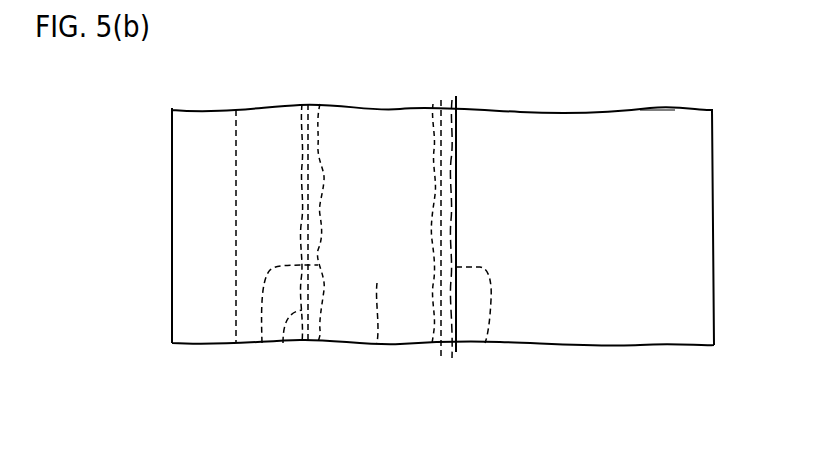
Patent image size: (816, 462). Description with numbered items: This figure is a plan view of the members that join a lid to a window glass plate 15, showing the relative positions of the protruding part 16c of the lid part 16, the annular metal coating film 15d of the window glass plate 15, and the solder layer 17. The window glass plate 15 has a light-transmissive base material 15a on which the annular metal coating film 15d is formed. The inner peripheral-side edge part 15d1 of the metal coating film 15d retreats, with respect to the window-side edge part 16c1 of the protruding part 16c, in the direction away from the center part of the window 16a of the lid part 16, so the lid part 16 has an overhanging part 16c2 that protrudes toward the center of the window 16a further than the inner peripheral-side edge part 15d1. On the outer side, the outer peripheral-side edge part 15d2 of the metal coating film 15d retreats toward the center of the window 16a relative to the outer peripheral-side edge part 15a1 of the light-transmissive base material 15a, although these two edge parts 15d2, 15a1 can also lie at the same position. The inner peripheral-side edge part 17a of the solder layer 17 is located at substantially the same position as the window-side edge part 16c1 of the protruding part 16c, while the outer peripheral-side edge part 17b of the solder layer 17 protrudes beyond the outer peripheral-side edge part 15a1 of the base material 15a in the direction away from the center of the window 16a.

The window glass plate 15 is at (630, 344).
The light-transmissive base material 15a is at (657, 133).
The outer peripheral-side edge part of the light-transmissive base material 15a1 is at (285, 343).
The annular metal coating film 15d is at (377, 343).
The inner peripheral-side edge part of the metal coating film 15d1 is at (485, 343).
The outer peripheral-side edge part of the metal coating film 15d2 is at (268, 343).
The lid part 16 is at (192, 111).
The window of the lid part 16a is at (456, 127).
The protruding part of the lid part 16c is at (255, 132).
The window-side edge part of the protruding part 16c1 is at (456, 158).
The overhanging part 16c2 is at (447, 110).
The solder layer 17 is at (379, 130).
The inner peripheral-side edge part of the solder layer 17a is at (457, 216).
The outer peripheral-side edge part of the solder layer 17b is at (300, 212).